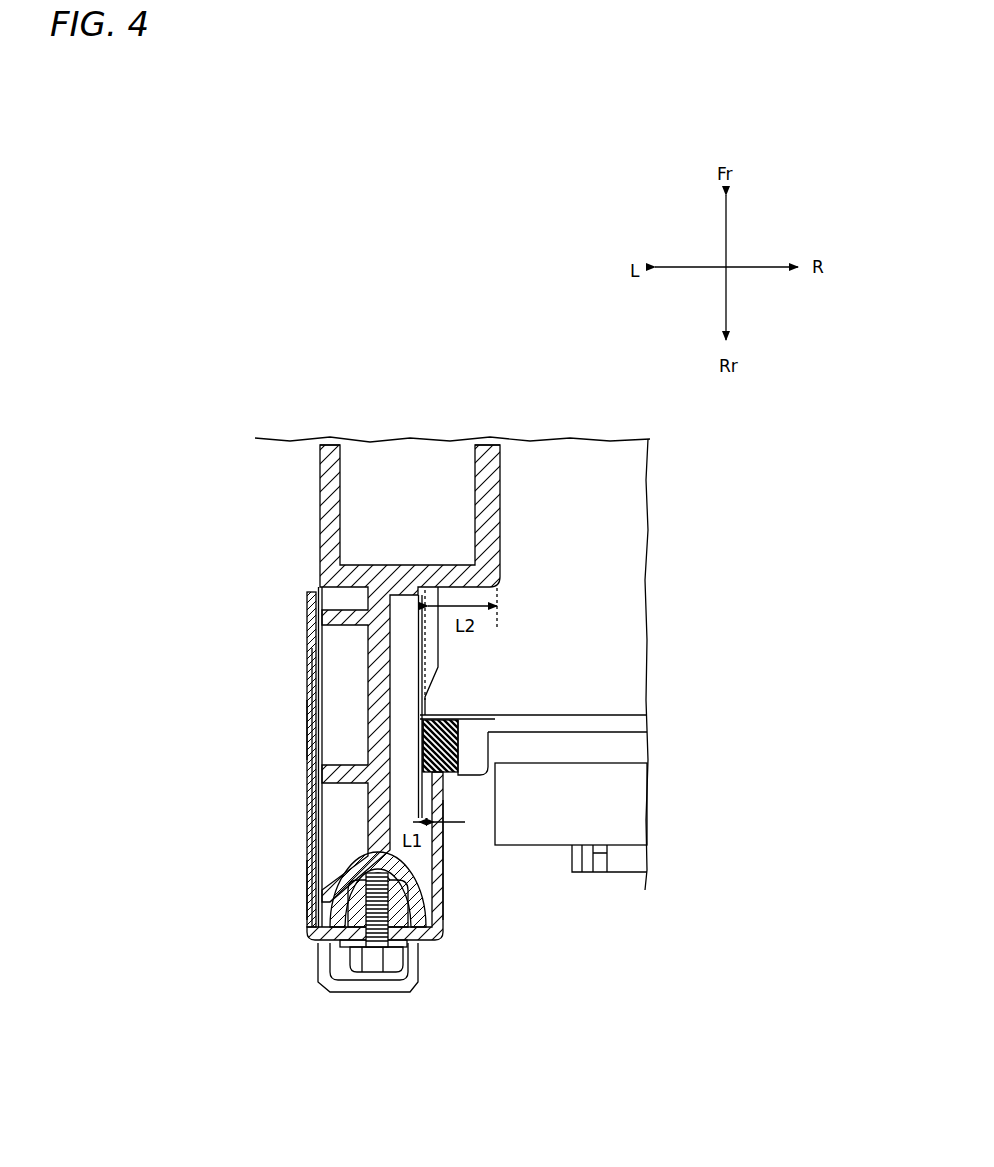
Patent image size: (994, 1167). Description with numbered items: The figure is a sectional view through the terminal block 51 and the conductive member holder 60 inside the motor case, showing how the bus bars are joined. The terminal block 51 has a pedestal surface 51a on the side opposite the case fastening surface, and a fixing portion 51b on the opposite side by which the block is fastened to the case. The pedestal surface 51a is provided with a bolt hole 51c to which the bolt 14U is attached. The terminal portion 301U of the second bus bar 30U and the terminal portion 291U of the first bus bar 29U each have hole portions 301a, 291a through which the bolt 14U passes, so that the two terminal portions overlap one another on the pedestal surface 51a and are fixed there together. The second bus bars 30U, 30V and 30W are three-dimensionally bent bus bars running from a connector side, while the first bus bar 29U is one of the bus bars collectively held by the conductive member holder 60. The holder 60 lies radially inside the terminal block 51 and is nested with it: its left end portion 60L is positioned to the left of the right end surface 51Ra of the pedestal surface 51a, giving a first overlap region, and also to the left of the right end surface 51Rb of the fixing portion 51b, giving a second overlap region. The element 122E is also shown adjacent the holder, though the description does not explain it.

The terminal block 51 is at (318, 539).
The pedestal surface 51a is at (316, 960).
The fixing portion 51b is at (318, 470).
The bolt hole 51c is at (356, 947).
The right end surface of the pedestal surface 51Ra is at (440, 932).
The right end surface of the fixing portion 51Rb is at (500, 497).
The second bus bar 30W is at (307, 615).
The second bus bar 30V is at (307, 712).
The second bus bar 30U is at (307, 882).
The conductive member holder 60 is at (456, 786).
The left end portion of the conductive member holder 60L is at (424, 740).
The first bus bar 29U is at (625, 745).
The end portion of battery case 122E is at (630, 808).
The bolt 14U is at (378, 972).
The hole portion 291a is at (387, 950).
The terminal portion of the first bus bar 291U is at (430, 935).
The hole portion 301a is at (350, 952).
The terminal portion of the second bus bar 301U is at (340, 955).